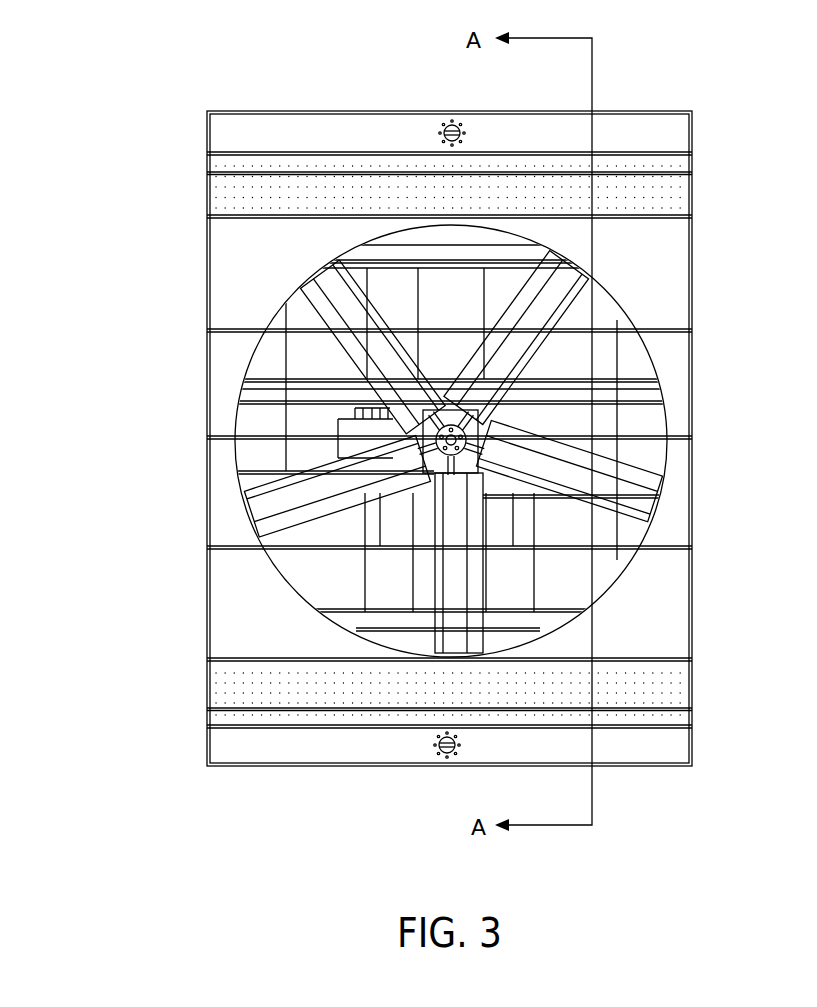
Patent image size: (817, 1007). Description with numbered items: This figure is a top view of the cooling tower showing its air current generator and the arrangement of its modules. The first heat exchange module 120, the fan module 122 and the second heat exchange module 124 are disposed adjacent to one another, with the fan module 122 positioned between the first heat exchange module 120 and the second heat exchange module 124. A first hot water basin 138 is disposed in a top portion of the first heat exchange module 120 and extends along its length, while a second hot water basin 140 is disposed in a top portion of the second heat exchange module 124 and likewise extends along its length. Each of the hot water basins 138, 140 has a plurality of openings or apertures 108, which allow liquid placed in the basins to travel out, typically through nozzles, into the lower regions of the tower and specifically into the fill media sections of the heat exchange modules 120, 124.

The openings or apertures 108 is at (677, 165).
The first heat exchange module 120 is at (207, 621).
The fan module 122 is at (207, 497).
The second heat exchange module 124 is at (207, 285).
The first hot water basin 138 is at (207, 693).
The second hot water basin 140 is at (207, 188).